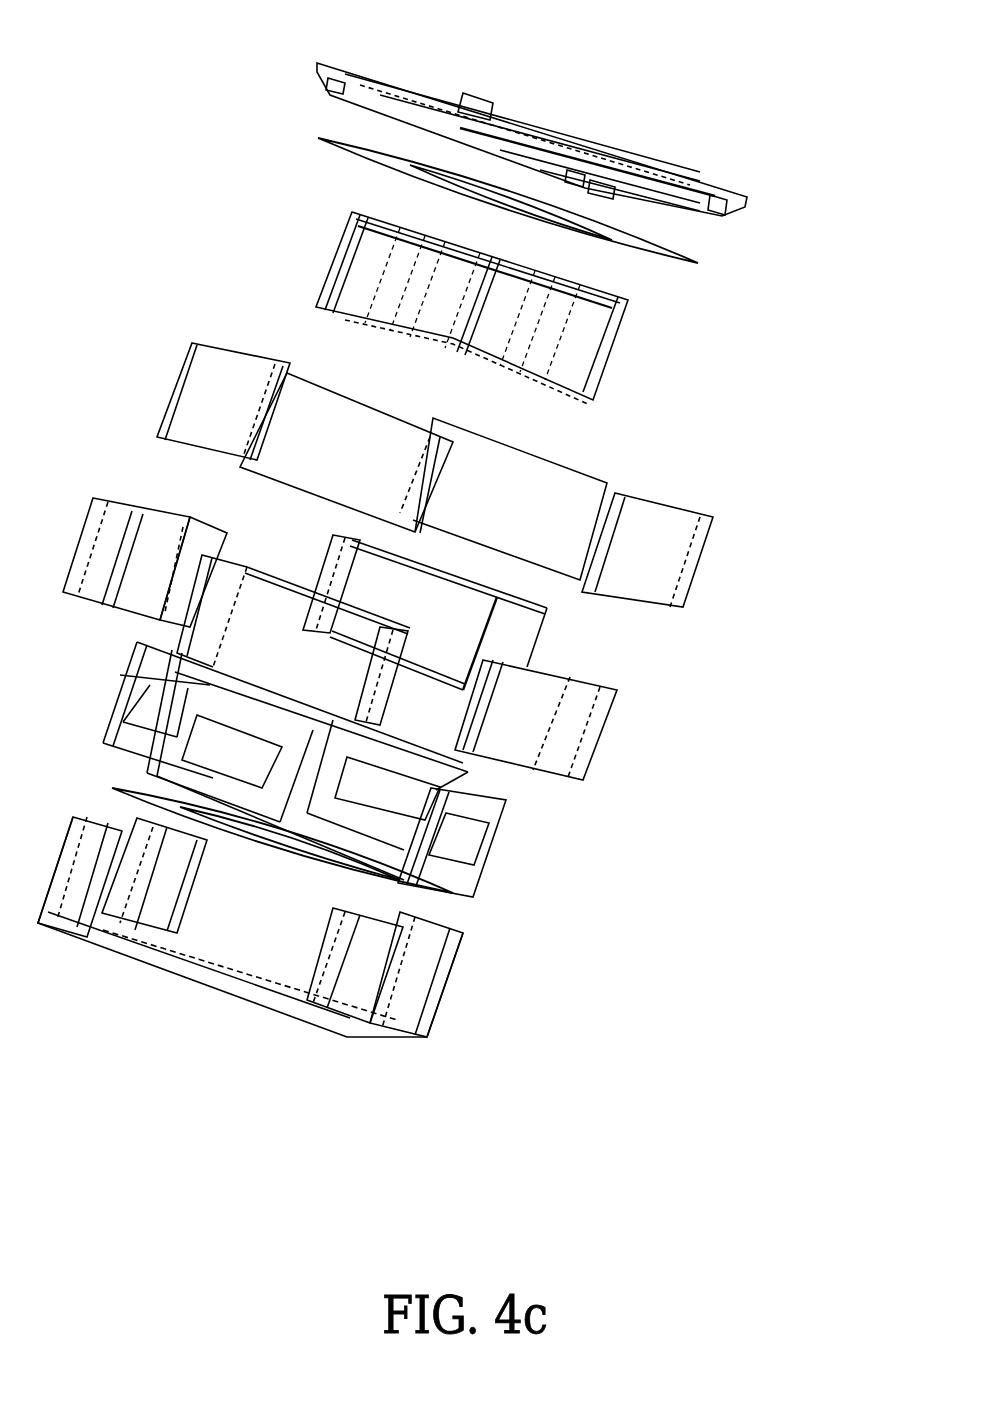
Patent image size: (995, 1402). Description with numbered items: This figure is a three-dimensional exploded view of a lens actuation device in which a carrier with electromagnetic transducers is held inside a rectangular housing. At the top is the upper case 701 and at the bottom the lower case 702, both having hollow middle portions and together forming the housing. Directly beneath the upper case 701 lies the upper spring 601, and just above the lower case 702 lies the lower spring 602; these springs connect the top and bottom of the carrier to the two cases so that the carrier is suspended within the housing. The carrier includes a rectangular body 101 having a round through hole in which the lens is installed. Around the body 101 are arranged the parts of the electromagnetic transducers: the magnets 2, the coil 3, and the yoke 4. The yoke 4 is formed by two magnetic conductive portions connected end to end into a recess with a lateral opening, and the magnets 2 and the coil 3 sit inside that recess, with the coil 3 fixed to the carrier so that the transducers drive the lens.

The upper case 701 is at (310, 43).
The upper spring 601 is at (307, 133).
The body 101 is at (318, 252).
The magnets 2 is at (187, 332).
The yoke 4 is at (550, 632).
The coil 3 is at (505, 845).
The lower spring 602 is at (393, 892).
The lower case 702 is at (460, 1000).